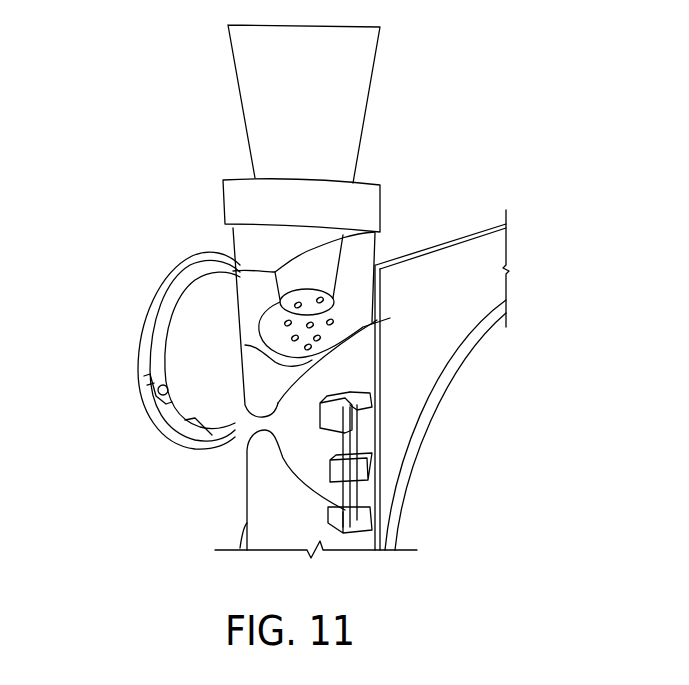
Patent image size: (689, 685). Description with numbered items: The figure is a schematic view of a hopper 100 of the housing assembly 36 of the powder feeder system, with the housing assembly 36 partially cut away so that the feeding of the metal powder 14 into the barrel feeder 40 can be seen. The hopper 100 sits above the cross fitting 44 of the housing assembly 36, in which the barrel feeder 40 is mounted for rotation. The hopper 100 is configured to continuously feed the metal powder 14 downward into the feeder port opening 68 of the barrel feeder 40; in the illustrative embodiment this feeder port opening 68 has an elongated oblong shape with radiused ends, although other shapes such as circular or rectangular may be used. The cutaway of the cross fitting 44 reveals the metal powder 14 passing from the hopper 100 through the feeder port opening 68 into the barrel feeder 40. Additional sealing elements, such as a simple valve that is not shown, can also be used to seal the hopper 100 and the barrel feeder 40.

The hopper 100 is at (376, 62).
The barrel feeder 40 is at (250, 290).
The metal powder 14 is at (333, 323).
The feeder port opening 68 is at (277, 328).
The cross fitting 44 is at (263, 390).
The housing assembly 36 is at (222, 517).